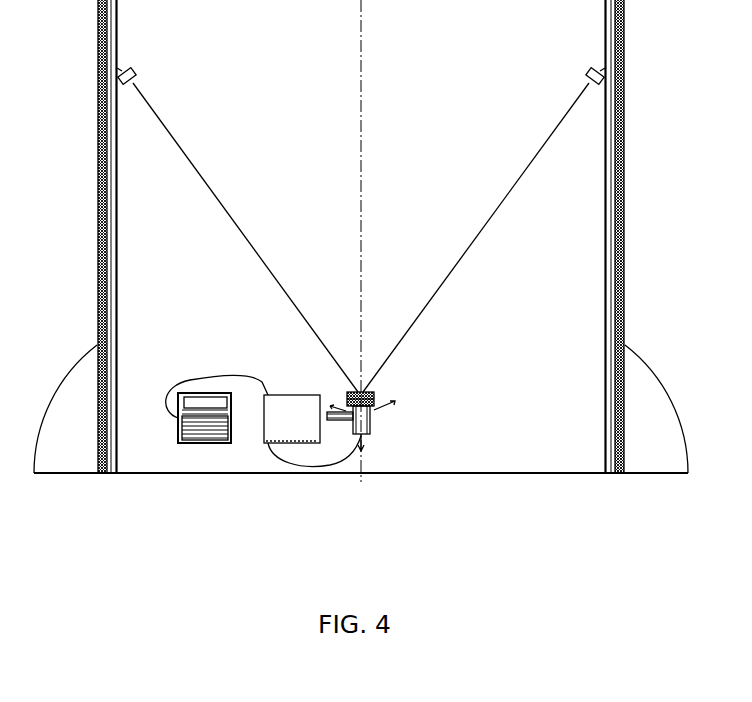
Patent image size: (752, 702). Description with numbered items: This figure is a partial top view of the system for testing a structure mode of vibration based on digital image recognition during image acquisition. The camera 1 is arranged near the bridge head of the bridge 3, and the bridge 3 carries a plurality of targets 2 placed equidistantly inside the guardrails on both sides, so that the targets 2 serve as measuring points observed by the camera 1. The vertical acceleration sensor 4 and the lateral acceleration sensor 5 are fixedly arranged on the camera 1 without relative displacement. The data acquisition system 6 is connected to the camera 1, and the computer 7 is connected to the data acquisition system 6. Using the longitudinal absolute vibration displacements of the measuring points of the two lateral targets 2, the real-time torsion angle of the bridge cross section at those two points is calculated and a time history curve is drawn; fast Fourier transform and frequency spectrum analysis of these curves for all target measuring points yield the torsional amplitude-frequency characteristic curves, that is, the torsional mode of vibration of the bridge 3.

The camera 1 is at (358, 391).
The target 2 is at (134, 86).
The bridge 3 is at (390, 240).
The vertical acceleration sensor 4 is at (362, 391).
The lateral acceleration sensor 5 is at (470, 157).
The data acquisition system 6 is at (284, 423).
The computer 7 is at (200, 398).